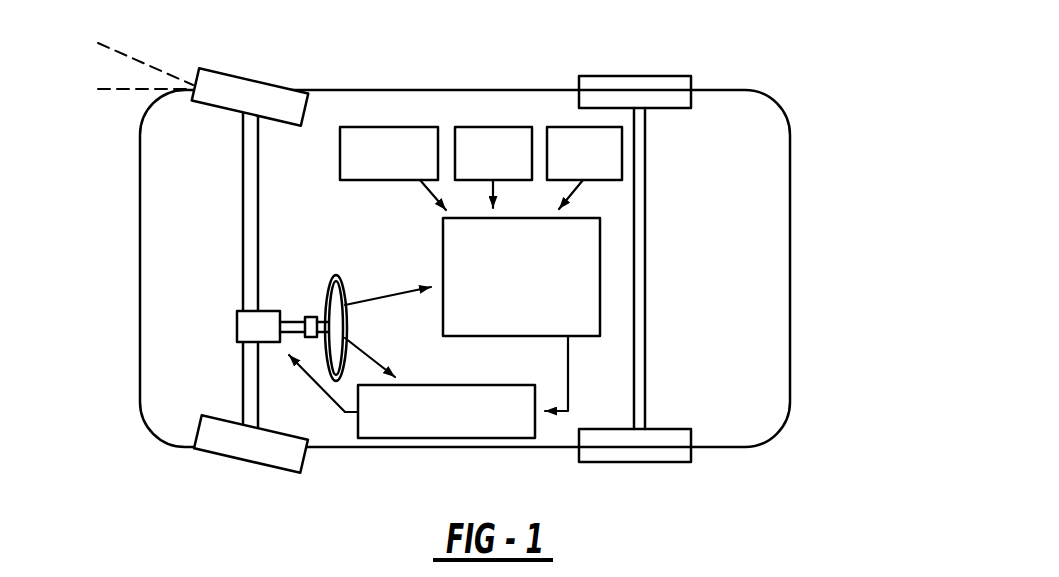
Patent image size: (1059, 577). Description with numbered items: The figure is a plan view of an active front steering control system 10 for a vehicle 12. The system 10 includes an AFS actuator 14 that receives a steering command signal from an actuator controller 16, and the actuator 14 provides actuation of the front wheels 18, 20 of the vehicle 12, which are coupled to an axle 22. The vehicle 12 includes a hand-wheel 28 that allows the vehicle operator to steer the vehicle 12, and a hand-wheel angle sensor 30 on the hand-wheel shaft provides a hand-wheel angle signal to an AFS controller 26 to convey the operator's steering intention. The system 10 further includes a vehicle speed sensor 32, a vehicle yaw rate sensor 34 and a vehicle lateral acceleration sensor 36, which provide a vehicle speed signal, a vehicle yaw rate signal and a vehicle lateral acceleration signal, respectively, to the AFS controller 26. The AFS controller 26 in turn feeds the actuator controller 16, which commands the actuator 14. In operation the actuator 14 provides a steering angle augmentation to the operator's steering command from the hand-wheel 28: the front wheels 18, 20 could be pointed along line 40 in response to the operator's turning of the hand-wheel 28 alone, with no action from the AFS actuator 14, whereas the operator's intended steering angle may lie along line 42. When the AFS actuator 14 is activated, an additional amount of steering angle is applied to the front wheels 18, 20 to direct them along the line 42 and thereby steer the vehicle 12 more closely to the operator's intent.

The AFS control system 10 is at (633, 52).
The vehicle 12 is at (790, 222).
The AFS actuator 14 is at (237, 328).
The actuator controller 16 is at (427, 440).
The front wheel 18 is at (250, 93).
The front wheel 20 is at (245, 442).
The axle 22 is at (250, 210).
The AFS controller 26 is at (577, 336).
The hand-wheel 28 is at (345, 288).
The hand-wheel angle sensor 30 is at (313, 317).
The vehicle speed sensor 32 is at (393, 127).
The vehicle yaw rate sensor 34 is at (505, 127).
The vehicle lateral acceleration sensor 36 is at (622, 152).
The line 40 is at (135, 89).
The line 42 is at (120, 52).